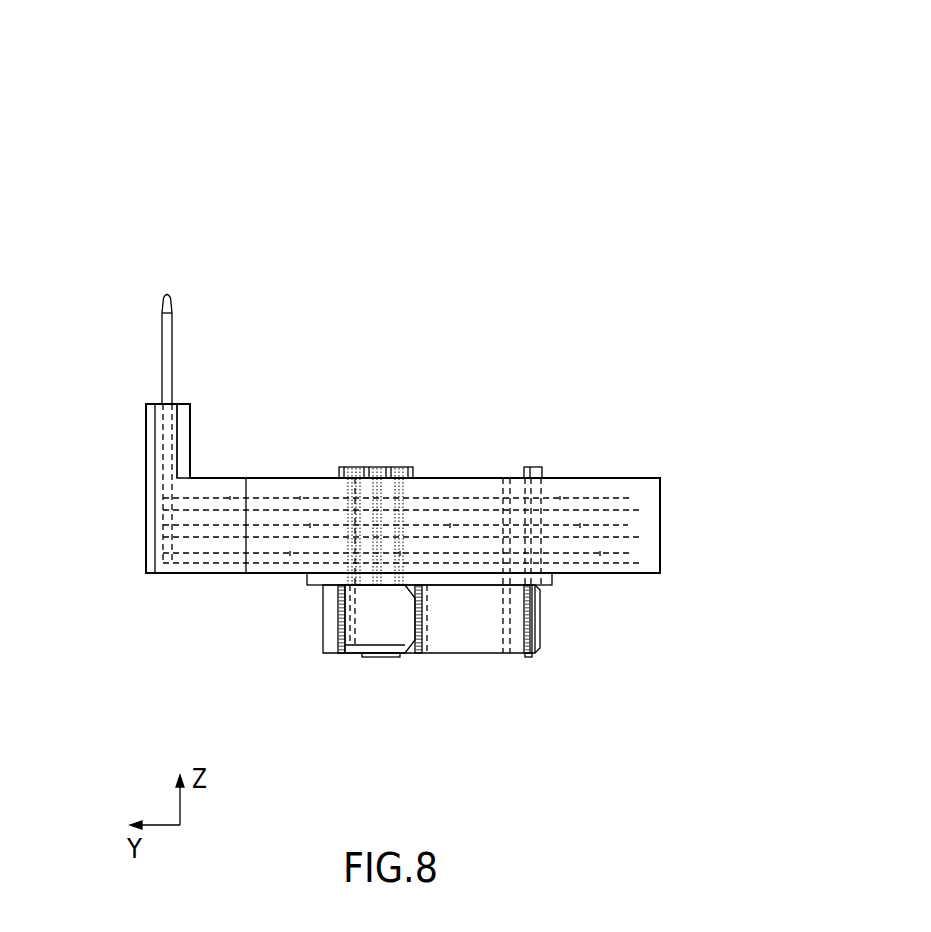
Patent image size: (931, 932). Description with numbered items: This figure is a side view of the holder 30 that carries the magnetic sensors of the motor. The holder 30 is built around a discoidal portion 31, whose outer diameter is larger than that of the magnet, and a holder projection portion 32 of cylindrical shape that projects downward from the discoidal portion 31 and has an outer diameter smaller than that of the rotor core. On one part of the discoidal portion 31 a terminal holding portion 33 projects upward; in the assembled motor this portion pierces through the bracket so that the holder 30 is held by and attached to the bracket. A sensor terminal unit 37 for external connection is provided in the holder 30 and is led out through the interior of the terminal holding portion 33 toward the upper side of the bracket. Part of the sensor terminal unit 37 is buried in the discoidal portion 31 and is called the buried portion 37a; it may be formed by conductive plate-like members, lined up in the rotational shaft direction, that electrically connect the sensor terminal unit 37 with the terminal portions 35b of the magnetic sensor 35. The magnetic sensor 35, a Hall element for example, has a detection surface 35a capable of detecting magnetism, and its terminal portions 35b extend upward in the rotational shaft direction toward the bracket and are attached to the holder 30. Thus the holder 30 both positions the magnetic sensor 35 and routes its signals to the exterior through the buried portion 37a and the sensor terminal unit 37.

The holder 30 is at (66, 47).
The discoidal portion 31 is at (605, 477).
The holder projection portion 32 is at (322, 617).
The terminal holding portion 33 is at (153, 468).
The magnetic sensor 35 is at (438, 694).
The detection surface 35a is at (537, 628).
The terminal portions 35b is at (532, 466).
The sensor terminal unit 37 is at (160, 291).
The buried portion 37a is at (625, 557).